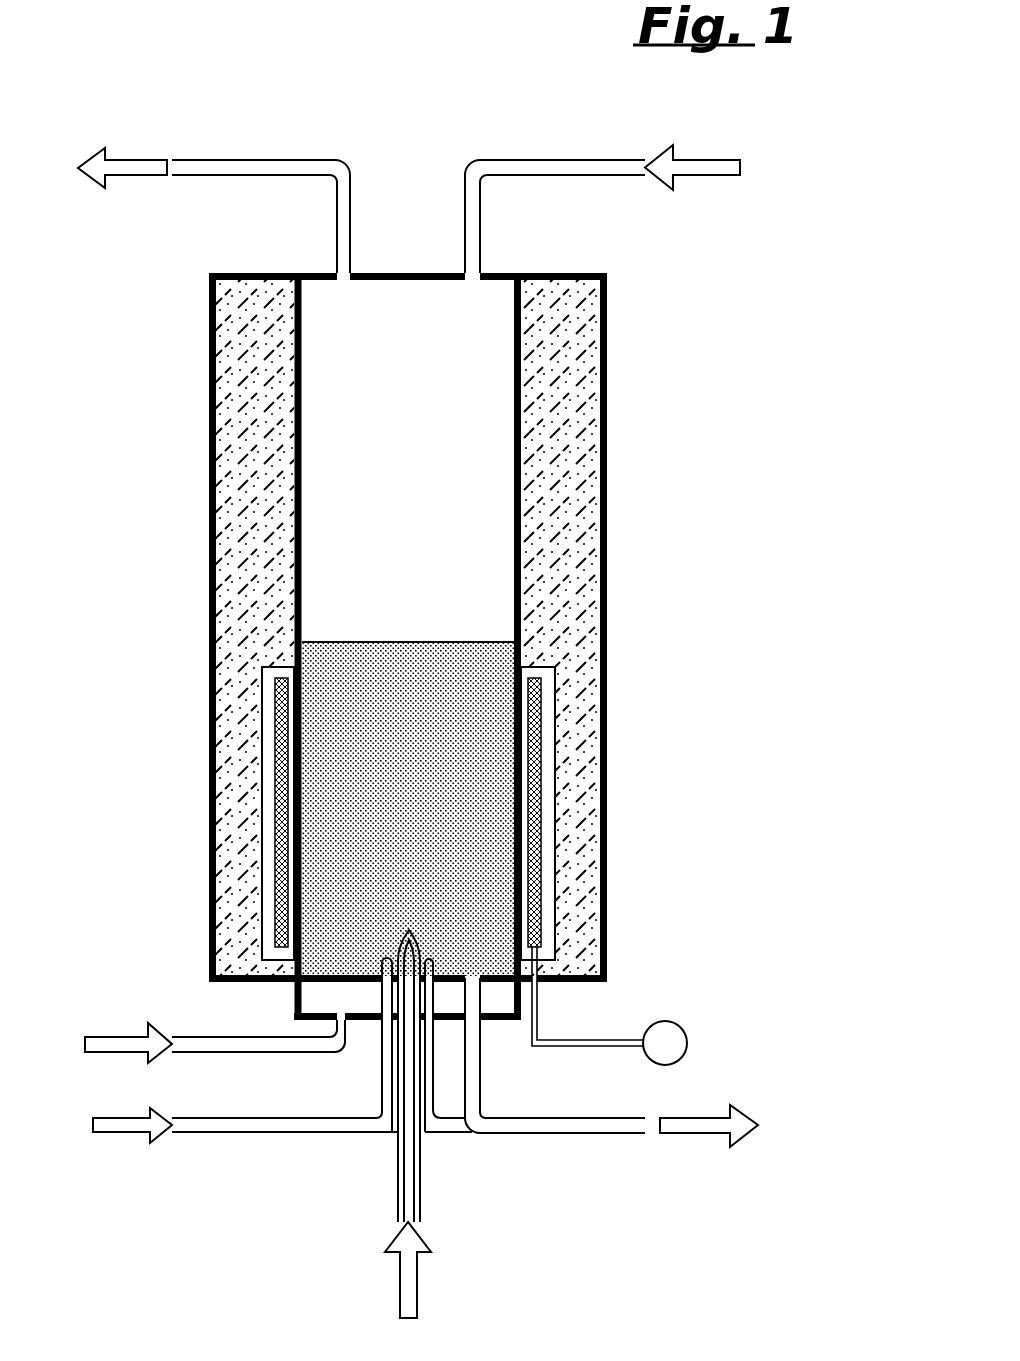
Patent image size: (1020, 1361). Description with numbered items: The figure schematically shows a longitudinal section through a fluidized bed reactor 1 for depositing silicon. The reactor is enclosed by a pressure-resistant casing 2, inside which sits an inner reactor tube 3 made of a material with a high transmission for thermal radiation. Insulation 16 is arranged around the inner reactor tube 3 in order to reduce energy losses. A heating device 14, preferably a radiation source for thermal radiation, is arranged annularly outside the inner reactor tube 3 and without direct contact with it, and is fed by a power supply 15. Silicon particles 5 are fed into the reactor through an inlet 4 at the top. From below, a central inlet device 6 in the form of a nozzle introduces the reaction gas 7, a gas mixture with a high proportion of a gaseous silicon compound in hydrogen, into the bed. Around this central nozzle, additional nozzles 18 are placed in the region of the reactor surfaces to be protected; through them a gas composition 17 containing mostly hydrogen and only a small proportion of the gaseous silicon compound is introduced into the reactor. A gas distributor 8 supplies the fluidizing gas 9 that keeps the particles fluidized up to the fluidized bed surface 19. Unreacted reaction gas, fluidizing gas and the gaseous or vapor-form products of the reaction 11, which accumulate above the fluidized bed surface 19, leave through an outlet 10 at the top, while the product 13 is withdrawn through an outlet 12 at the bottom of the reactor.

The fluidized bed reactor 1 is at (660, 570).
The pressure-resistant casing 2 is at (210, 345).
The inner reactor tube 3 is at (295, 410).
The inlet for silicon particles 4 is at (472, 242).
The silicon particles 5 is at (705, 162).
The inlet device 6 is at (400, 930).
The reaction gas 7 is at (410, 1272).
The gas distributor 8 is at (455, 960).
The fluidizing gas 9 is at (117, 1043).
The outlet for unreacted reaction gas 10 is at (340, 242).
The gaseous or vapor-form products of the reaction 11 is at (132, 165).
The outlet for the product 12 is at (470, 1050).
The product 13 is at (700, 1127).
The heating device 14 is at (280, 765).
The power supply 15 is at (665, 1047).
The insulation 16 is at (265, 490).
The gas composition 17 is at (112, 1128).
The additional nozzles 18 is at (384, 960).
The fluidized bed surface 19 is at (428, 640).